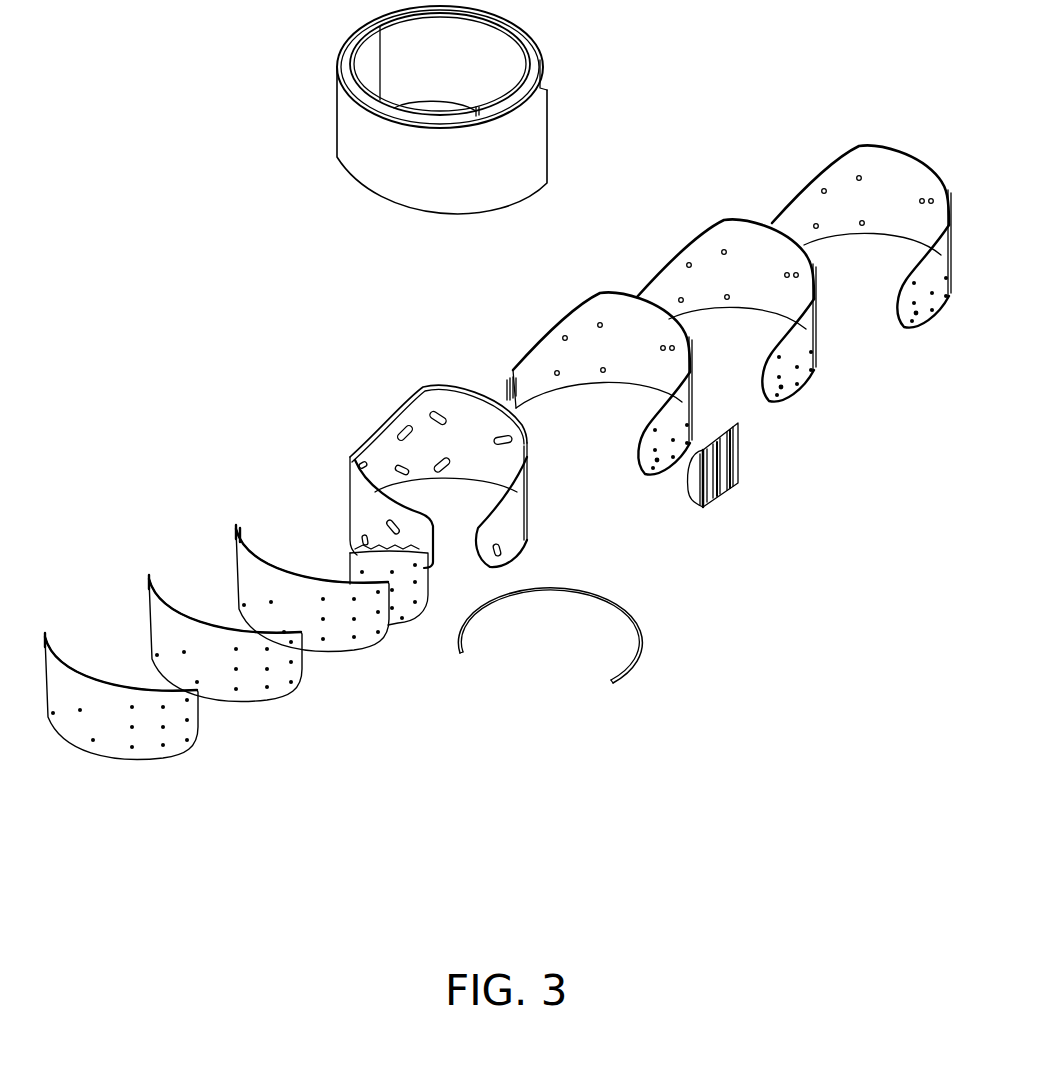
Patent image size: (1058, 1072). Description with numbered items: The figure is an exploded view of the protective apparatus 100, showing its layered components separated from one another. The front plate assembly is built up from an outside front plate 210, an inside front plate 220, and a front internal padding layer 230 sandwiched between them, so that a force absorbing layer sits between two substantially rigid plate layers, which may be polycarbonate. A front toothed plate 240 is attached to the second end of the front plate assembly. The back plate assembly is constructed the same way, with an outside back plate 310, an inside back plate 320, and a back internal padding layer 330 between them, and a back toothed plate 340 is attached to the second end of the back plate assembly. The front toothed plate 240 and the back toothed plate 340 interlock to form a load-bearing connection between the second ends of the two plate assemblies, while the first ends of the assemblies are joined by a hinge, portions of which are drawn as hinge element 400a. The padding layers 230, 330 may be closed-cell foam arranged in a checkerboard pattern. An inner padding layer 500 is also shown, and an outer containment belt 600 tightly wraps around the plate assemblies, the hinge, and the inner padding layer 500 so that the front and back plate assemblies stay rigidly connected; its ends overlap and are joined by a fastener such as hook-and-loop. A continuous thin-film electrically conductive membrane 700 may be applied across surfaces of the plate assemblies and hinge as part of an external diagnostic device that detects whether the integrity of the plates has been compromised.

The protective apparatus 100 is at (240, 328).
The outside front plate 210 is at (118, 743).
The inside front plate 220 is at (337, 632).
The front internal padding layer 230 is at (250, 677).
The front toothed plate 240 is at (410, 608).
The outside back plate 310 is at (867, 173).
The inside back plate 320 is at (588, 310).
The back internal padding layer 330 is at (720, 243).
The back toothed plate 340 is at (703, 480).
The connector strip 400a is at (507, 397).
The inner padding layer 500 is at (418, 417).
The outer containment belt 600 is at (534, 140).
The continuous thin-film electrically conductive membrane 700 is at (640, 650).